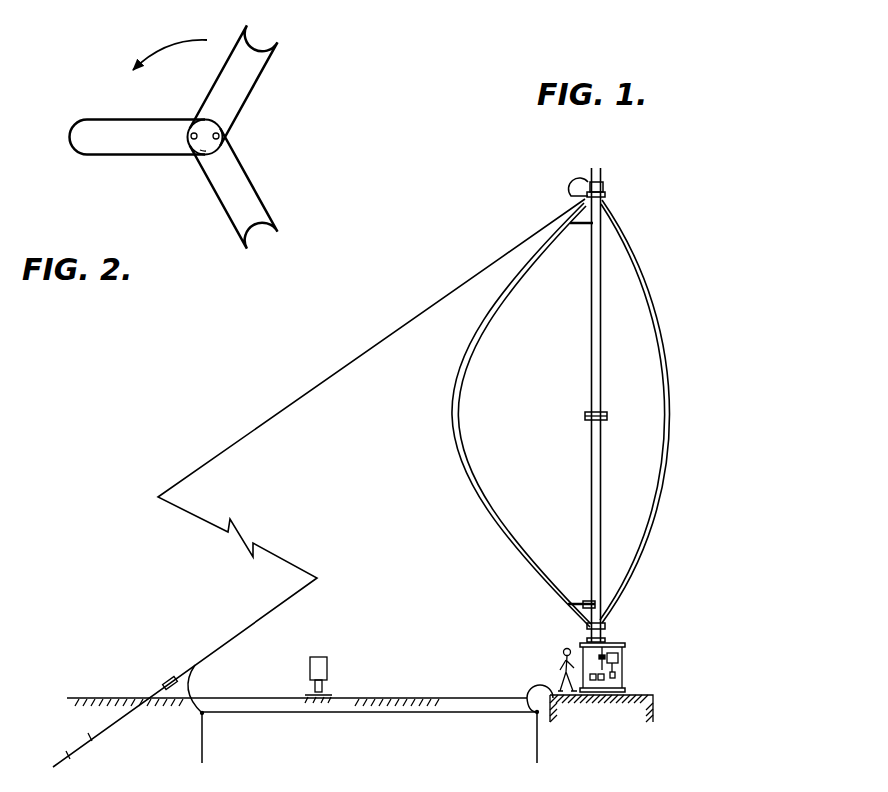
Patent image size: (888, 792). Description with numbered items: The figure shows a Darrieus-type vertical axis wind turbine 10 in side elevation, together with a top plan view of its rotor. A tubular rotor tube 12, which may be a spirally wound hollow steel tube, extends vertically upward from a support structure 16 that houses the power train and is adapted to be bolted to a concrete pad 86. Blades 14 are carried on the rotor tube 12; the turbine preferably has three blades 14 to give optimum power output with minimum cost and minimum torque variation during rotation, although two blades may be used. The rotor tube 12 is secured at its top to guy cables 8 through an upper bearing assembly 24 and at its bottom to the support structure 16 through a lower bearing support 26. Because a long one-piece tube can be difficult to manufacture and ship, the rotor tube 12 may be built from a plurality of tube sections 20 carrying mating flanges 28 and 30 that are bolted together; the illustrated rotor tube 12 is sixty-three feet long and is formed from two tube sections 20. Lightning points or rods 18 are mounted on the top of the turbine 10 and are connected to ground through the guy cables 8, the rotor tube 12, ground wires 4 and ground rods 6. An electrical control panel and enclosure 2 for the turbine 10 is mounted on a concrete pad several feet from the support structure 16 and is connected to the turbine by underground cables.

In FIG. 1, the electrical control panel and enclosure 2 is at (323, 656).
In FIG. 1, the ground wires 4 is at (200, 688).
In FIG. 1, the ground rods 6 is at (205, 752).
In FIG. 1, the guy cables 8 is at (268, 418).
In FIG. 1, the vertical axis wind turbine 10 is at (655, 245).
In FIG. 1, the rotor tube 12 is at (590, 298).
In FIG. 2, the blades 14 is at (262, 70).
In FIG. 1, the blades 14 is at (457, 388).
In FIG. 1, the support structure 16 is at (628, 660).
In FIG. 2, the lightning points or rods 18 is at (222, 137).
In FIG. 1, the lightning points or rods 18 is at (588, 184).
In FIG. 1, the tube sections 20 is at (591, 338).
In FIG. 2, the upper bearing assembly 24 is at (195, 152).
In FIG. 1, the upper bearing assembly 24 is at (604, 187).
In FIG. 1, the lower bearing support 26 is at (585, 640).
In FIG. 1, the mating flange 28 is at (607, 413).
In FIG. 1, the mating flange 30 is at (605, 421).
In FIG. 1, the concrete pad 86 is at (655, 705).